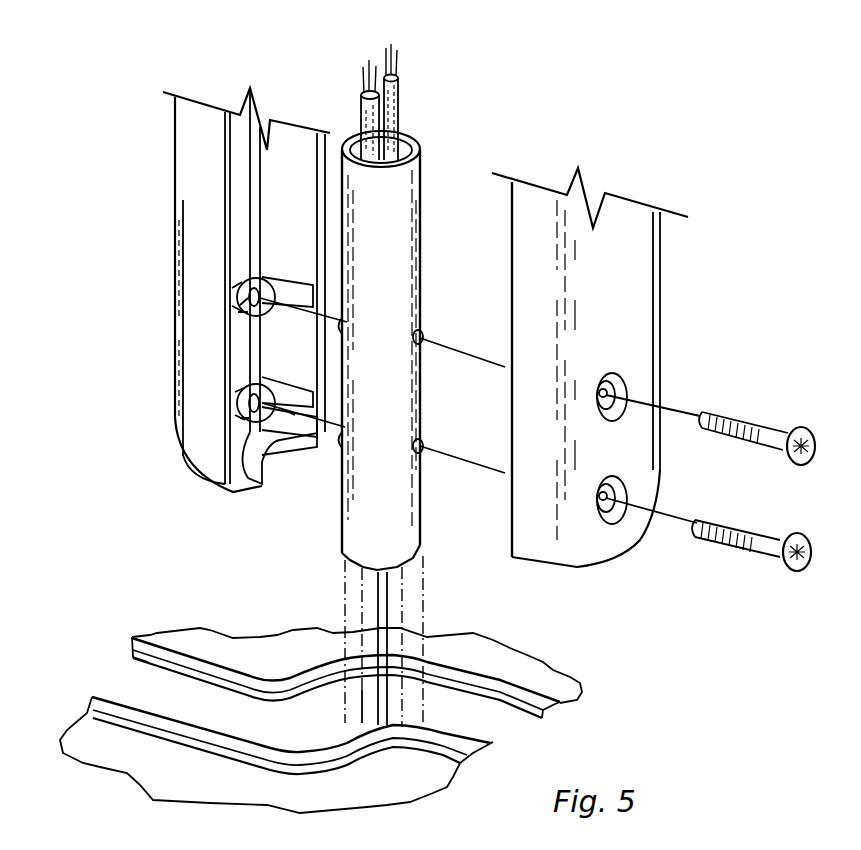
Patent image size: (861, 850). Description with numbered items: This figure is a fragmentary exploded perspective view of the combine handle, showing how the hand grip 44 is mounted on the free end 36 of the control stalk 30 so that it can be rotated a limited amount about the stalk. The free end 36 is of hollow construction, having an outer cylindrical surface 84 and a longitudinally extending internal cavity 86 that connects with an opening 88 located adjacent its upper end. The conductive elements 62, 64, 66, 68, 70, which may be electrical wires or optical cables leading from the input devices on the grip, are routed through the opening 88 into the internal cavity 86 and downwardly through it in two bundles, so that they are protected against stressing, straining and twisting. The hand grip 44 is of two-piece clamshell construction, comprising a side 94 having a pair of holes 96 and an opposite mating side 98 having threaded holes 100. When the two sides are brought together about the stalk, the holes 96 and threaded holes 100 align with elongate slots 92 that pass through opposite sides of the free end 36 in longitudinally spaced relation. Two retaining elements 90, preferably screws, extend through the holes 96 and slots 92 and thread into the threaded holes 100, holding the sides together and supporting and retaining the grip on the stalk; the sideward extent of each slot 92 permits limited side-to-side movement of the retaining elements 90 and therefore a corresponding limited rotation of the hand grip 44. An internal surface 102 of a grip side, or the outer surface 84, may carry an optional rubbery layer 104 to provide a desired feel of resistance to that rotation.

The control stalk 30 is at (335, 535).
The free end 36 is at (381, 319).
The hand grip 44 is at (628, 552).
The conductive element 62 is at (473, 102).
The conductive element 64 is at (473, 102).
The conductive element 66 is at (400, 90).
The conductive element 68 is at (337, 88).
The conductive element 70 is at (360, 108).
The outer cylindrical surface 84 is at (430, 530).
The internal cavity 86 is at (405, 148).
The opening 88 is at (353, 143).
The retaining element 90 is at (775, 432).
The elongate slot 92 is at (345, 328).
The side 94 is at (617, 395).
The hole 96 is at (612, 383).
The mating side 98 is at (193, 470).
The threaded hole 100 is at (230, 320).
The internal surface 102 is at (247, 312).
The rubbery layer 104 is at (243, 292).